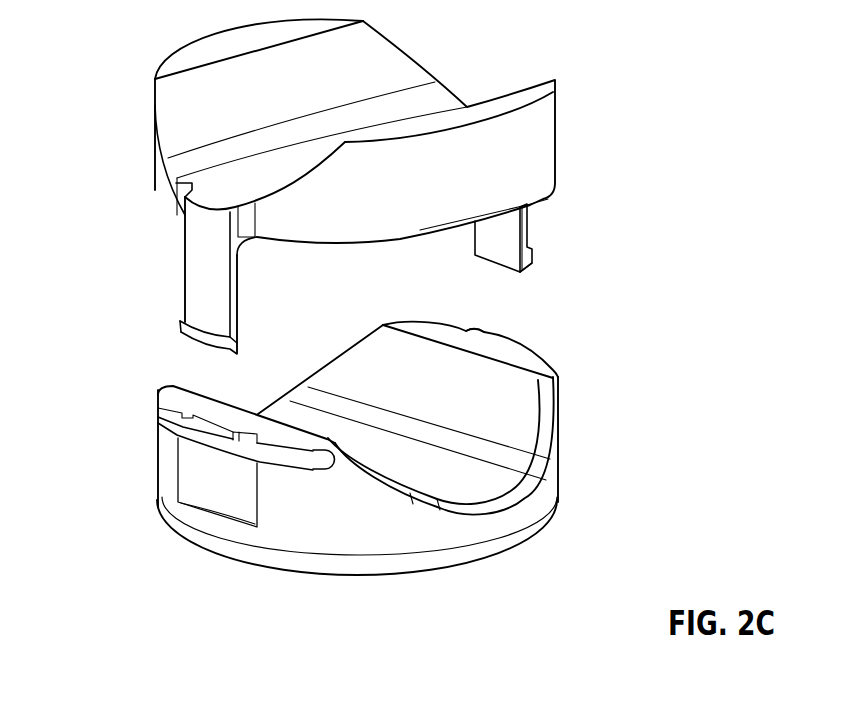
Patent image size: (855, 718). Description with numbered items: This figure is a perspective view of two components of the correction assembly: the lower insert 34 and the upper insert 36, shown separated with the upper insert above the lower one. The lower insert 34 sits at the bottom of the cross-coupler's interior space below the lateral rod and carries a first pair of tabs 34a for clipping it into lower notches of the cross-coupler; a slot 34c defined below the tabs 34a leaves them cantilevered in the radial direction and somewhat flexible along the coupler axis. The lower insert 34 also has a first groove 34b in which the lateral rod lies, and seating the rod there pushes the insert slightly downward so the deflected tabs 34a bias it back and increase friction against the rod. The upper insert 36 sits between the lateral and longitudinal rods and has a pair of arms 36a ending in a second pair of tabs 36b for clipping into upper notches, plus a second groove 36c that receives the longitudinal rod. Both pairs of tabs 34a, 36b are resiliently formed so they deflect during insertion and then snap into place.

The lower insert 34 is at (558, 500).
The first pair of tabs 34a is at (185, 426).
The first groove 34b is at (557, 437).
The slot 34c is at (316, 469).
The upper insert 36 is at (555, 121).
The arms 36a is at (183, 266).
The second pair of tabs 36b is at (183, 337).
The second groove 36c is at (190, 184).